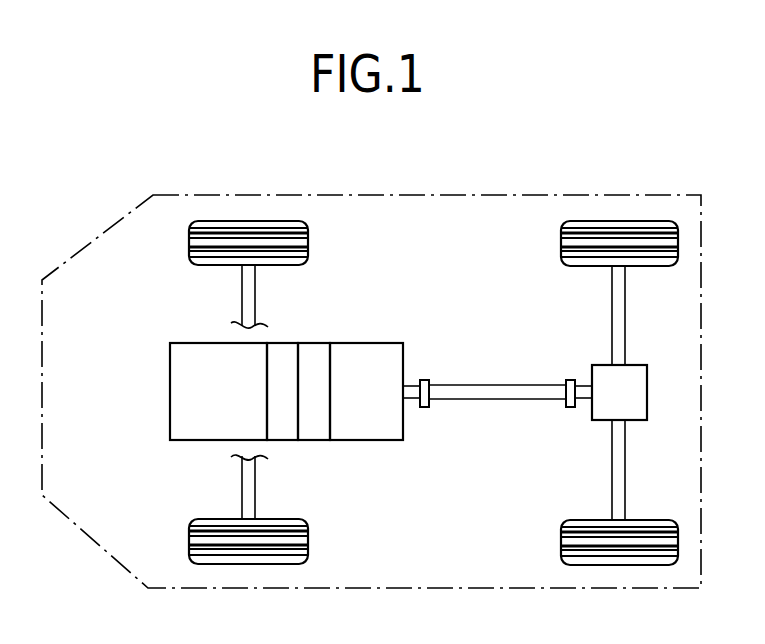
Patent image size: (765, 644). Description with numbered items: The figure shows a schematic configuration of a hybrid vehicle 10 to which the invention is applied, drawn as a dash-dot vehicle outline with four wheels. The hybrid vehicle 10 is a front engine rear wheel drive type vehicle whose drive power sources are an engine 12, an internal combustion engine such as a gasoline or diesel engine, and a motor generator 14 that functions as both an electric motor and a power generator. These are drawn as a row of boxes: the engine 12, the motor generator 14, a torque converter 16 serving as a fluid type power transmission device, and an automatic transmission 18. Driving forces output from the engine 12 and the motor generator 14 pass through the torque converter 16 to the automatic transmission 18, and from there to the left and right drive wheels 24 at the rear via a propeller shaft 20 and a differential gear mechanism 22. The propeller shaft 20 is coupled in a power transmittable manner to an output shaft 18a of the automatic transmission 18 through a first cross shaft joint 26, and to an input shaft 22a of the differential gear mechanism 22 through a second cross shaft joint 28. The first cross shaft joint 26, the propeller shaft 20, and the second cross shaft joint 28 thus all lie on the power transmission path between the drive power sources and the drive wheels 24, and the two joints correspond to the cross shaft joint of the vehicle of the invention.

The hybrid vehicle 10 is at (160, 165).
The engine 12 is at (220, 350).
The motor generator 14 is at (277, 350).
The torque converter 16 is at (318, 350).
The automatic transmission 18 is at (373, 350).
The output shaft 18a is at (411, 394).
The propeller shaft 20 is at (470, 393).
The differential gear mechanism 22 is at (632, 375).
The input shaft 22a is at (585, 400).
The drive wheels 24 is at (570, 233).
The first cross shaft joint 26 is at (425, 380).
The second cross shaft joint 28 is at (573, 380).